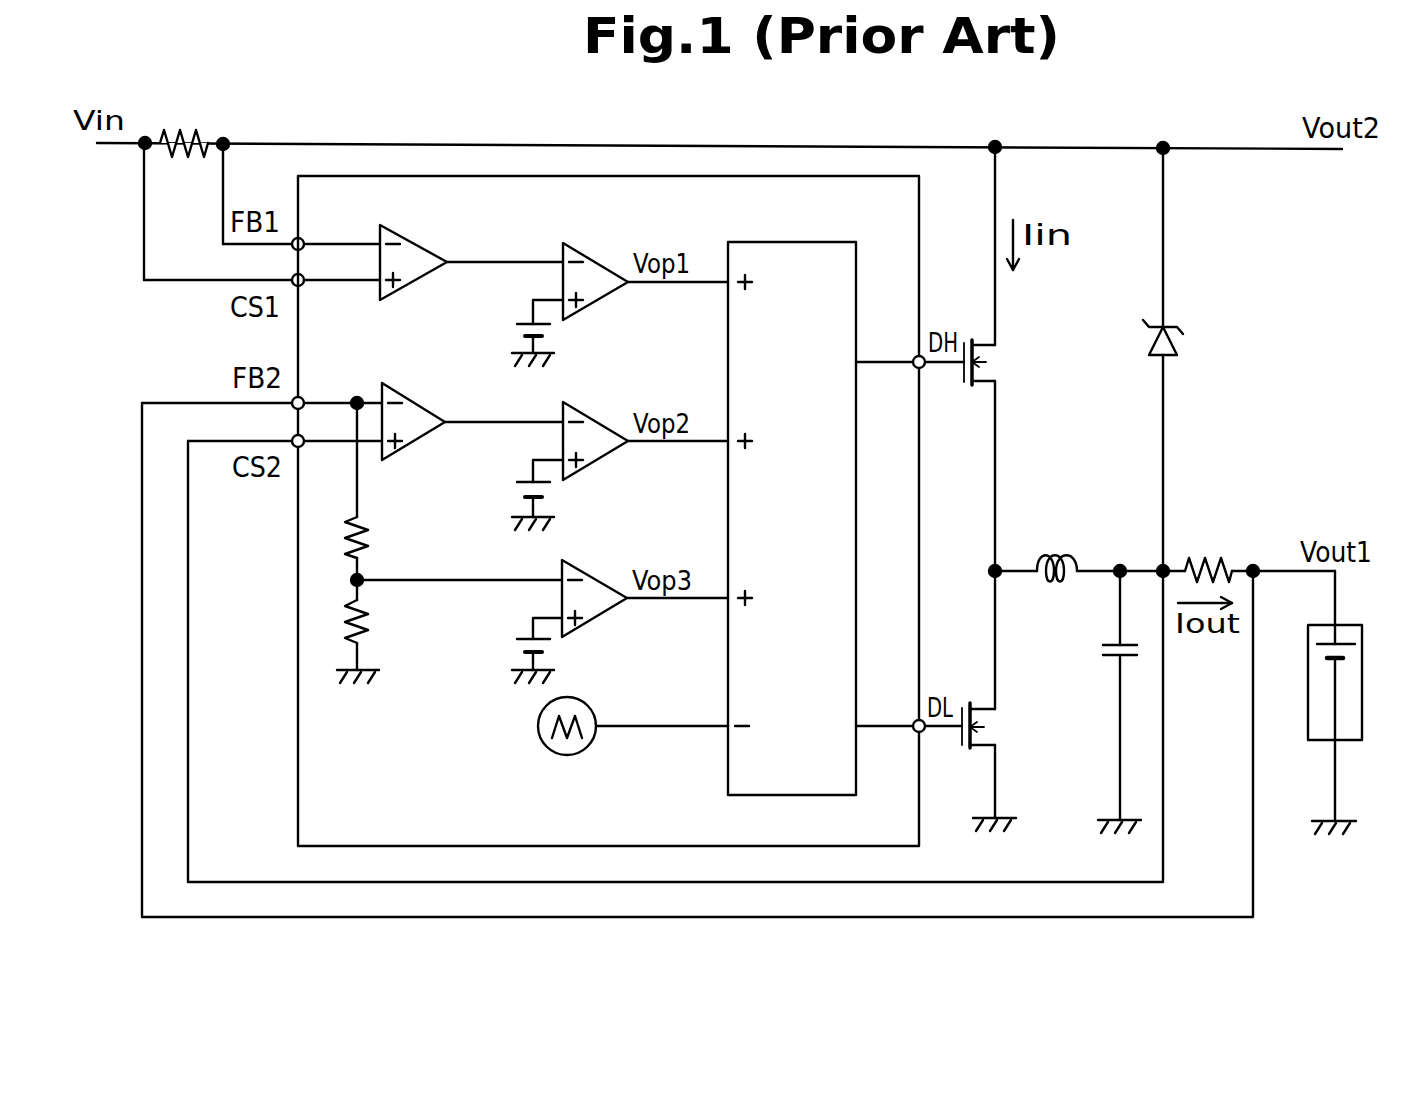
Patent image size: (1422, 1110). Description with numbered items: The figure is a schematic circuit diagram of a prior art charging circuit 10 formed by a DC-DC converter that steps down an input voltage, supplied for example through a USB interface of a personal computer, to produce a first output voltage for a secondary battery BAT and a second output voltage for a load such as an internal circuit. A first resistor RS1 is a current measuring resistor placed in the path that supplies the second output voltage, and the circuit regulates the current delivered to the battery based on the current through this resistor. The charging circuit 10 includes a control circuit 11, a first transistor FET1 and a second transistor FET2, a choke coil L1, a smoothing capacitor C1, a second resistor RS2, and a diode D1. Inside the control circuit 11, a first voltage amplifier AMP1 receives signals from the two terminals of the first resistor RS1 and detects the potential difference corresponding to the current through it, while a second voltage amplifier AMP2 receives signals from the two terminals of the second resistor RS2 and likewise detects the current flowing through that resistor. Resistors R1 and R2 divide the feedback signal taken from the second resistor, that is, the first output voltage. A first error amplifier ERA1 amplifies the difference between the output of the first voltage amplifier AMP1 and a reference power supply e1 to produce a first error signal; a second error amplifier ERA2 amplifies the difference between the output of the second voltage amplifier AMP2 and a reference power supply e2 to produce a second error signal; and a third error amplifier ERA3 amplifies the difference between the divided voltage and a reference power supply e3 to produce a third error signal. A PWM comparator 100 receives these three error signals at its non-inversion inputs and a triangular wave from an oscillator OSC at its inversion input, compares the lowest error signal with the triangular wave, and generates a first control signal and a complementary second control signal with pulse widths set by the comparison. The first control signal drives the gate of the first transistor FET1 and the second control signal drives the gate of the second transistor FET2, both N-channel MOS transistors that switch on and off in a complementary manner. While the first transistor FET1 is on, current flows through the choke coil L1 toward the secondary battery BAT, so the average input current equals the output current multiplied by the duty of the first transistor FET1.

The charging circuit 10 is at (1277, 243).
The control circuit 11 is at (921, 227).
The PWM comparator 100 is at (798, 242).
The first resistor RS1 is at (178, 130).
The second resistor RS2 is at (1208, 557).
The first voltage amplifier AMP1 is at (415, 243).
The second voltage amplifier AMP2 is at (413, 403).
The first error amplifier ERA1 is at (598, 258).
The second error amplifier ERA2 is at (598, 417).
The third error amplifier ERA3 is at (596, 574).
The reference power supply e1 is at (518, 322).
The reference power supply e2 is at (518, 484).
The reference power supply e3 is at (518, 639).
The resistor R1 is at (368, 532).
The resistor R2 is at (368, 616).
The oscillator OSC is at (538, 727).
The first transistor FET1 is at (986, 377).
The second transistor FET2 is at (984, 745).
The choke coil L1 is at (1055, 555).
The smoothing capacitor C1 is at (1109, 642).
The diode D1 is at (1180, 328).
The secondary battery BAT is at (1352, 622).